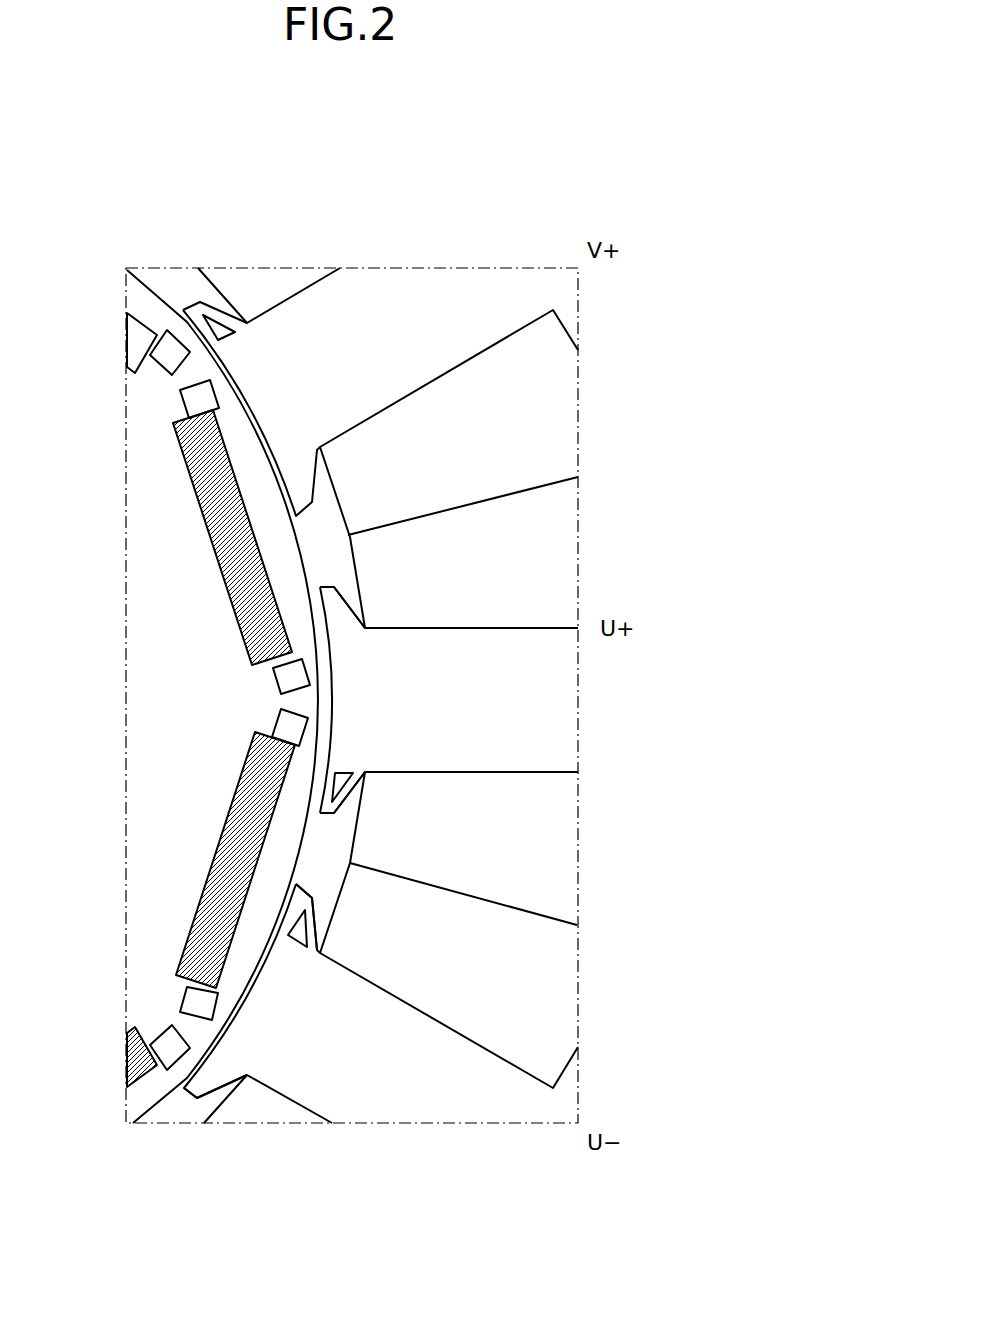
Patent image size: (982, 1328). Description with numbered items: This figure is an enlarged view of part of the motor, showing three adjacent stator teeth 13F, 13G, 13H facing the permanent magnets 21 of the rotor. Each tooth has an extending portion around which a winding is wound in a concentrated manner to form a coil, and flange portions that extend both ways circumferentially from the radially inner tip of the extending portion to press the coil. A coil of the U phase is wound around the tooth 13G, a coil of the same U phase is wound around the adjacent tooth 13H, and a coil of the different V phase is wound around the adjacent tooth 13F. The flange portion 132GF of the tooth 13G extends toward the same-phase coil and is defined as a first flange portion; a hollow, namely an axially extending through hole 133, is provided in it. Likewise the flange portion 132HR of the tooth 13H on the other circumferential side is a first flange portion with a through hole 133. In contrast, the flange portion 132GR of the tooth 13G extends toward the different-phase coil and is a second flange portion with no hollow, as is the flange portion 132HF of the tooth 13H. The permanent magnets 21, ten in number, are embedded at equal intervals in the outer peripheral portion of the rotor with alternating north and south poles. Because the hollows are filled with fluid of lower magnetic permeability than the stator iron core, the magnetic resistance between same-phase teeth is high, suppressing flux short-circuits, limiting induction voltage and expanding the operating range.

The tooth 13F is at (460, 290).
The tooth 13G is at (548, 697).
The tooth 13H is at (428, 1087).
The flange portion 132GR is at (340, 606).
The flange portion 132GF is at (343, 792).
The flange portion 132HR is at (305, 913).
The flange portion 132HF is at (217, 1073).
The through hole 133 is at (220, 330).
The permanent magnet 21 is at (230, 563).